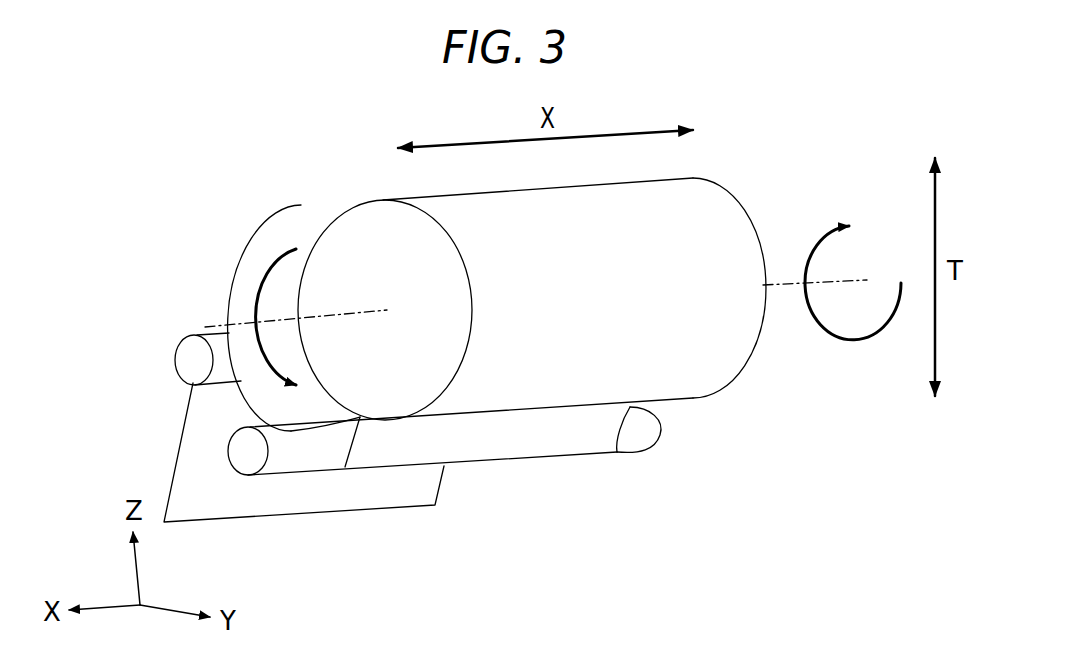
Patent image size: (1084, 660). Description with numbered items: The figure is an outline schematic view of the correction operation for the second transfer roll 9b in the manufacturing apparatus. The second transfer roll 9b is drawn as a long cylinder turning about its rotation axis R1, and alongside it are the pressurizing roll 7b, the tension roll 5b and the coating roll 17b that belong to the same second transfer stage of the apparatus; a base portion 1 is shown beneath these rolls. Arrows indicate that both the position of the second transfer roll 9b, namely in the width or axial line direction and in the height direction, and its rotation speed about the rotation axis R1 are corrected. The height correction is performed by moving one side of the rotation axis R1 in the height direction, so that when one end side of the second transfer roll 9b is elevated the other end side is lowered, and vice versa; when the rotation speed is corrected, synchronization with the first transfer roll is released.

The base housing 1 is at (175, 472).
The tension roll 5b is at (188, 355).
The pressurizing roll 7b is at (250, 253).
The second transfer roll 9b is at (734, 200).
The coating roll 17b is at (248, 458).
The rotation axis R1 is at (784, 281).